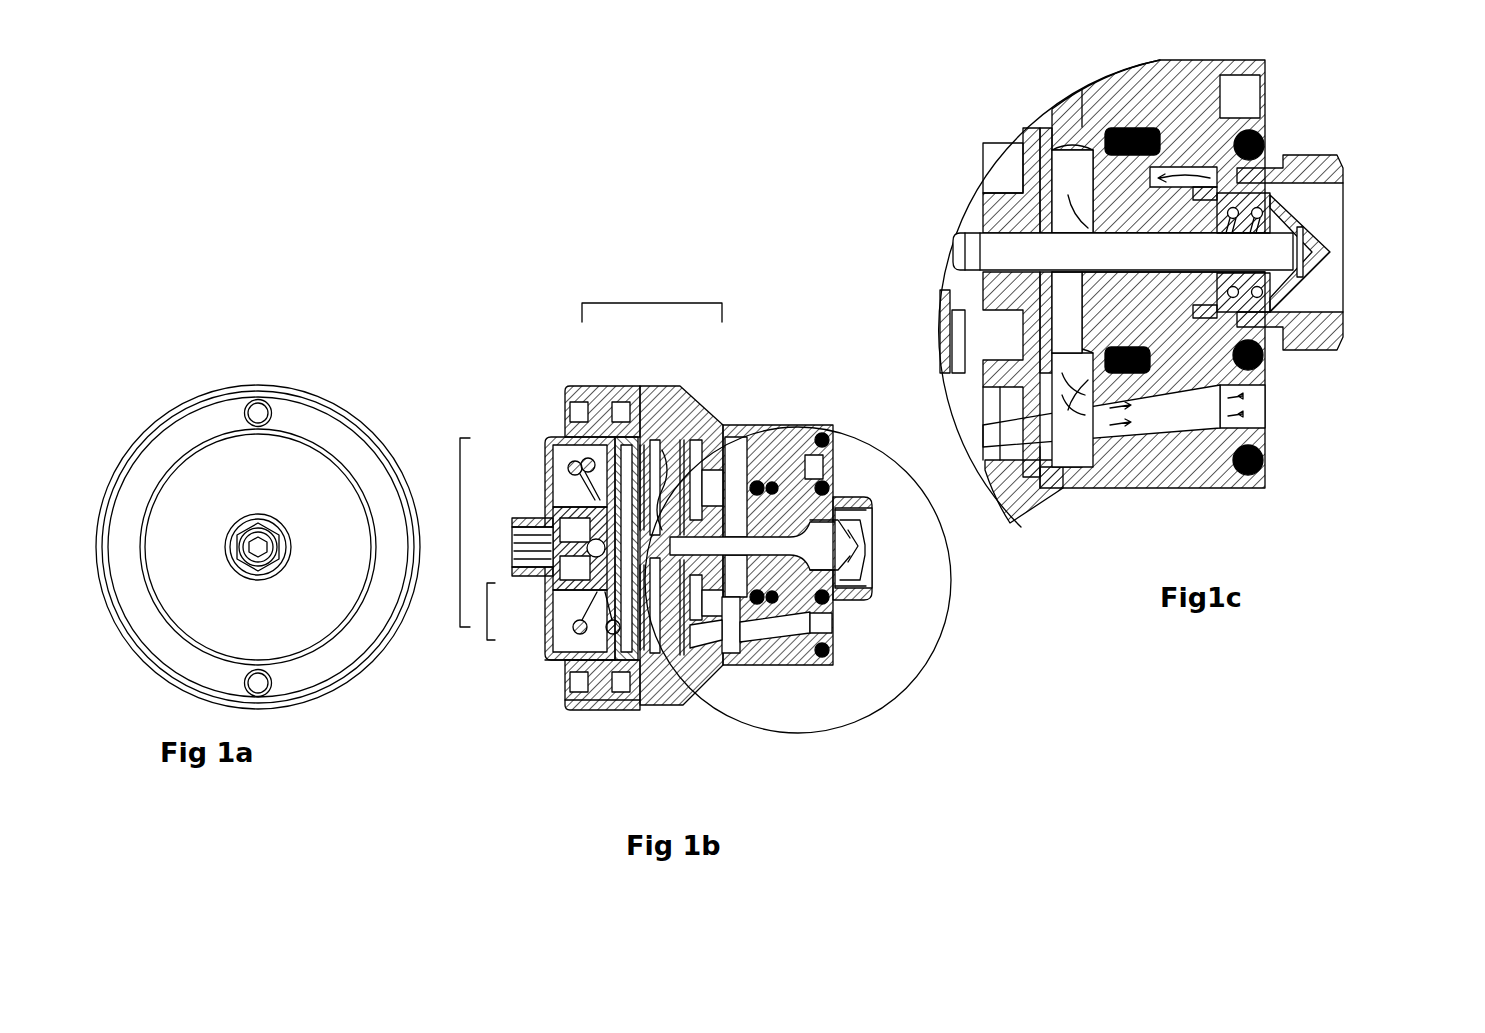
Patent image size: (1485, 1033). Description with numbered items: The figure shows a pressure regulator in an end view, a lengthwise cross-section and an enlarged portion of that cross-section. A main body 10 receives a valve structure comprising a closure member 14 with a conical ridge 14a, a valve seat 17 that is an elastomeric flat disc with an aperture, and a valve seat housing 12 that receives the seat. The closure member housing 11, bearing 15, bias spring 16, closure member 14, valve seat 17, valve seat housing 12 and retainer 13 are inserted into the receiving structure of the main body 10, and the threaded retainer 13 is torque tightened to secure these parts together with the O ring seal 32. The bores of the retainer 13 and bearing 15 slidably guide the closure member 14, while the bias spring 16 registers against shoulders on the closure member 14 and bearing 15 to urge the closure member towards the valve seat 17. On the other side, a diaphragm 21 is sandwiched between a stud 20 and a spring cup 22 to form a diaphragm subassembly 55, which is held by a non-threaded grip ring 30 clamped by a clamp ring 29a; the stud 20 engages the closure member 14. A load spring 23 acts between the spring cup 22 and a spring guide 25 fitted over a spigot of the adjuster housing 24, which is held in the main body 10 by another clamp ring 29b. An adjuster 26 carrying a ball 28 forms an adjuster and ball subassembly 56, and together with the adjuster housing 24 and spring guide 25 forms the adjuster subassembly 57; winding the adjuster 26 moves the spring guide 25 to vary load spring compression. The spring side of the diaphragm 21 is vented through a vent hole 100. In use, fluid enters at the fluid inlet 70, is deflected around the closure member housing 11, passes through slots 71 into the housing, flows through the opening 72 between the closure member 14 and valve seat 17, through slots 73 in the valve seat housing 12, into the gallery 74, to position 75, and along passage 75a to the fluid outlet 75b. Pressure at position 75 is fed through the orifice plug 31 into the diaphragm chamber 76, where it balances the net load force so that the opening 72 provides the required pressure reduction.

In FIG. 1A, the main body 10 is at (240, 380).
In FIG. 1B, the main body 10 is at (700, 398).
In FIG. 1C, the main body 10 is at (1175, 85).
In FIG. 1B, the closure member housing 11 is at (866, 540).
In FIG. 1C, the closure member housing 11 is at (1325, 262).
In FIG. 1B, the valve seat housing 12 is at (748, 480).
In FIG. 1C, the valve seat housing 12 is at (1090, 173).
In FIG. 1B, the retainer 13 is at (705, 445).
In FIG. 1C, the retainer 13 is at (1023, 138).
In FIG. 1B, the closure member 14 is at (846, 500).
In FIG. 1C, the closure member 14 is at (1293, 242).
In FIG. 1C, the ridge 14a is at (1283, 160).
In FIG. 1B, the bearing 15 is at (855, 522).
In FIG. 1C, the bearing 15 is at (1297, 290).
In FIG. 1B, the bias spring 16 is at (852, 523).
In FIG. 1C, the bias spring 16 is at (1293, 330).
In FIG. 1B, the valve seat 17 is at (828, 647).
In FIG. 1C, the valve seat 17 is at (1263, 147).
In FIG. 1B, the stud 20 is at (682, 437).
In FIG. 1B, the diaphragm 21 is at (648, 437).
In FIG. 1B, the spring cup 22 is at (620, 437).
In FIG. 1B, the load spring 23 is at (566, 437).
In FIG. 1A, the adjuster housing 24 is at (257, 618).
In FIG. 1B, the adjuster housing 24 is at (540, 455).
In FIG. 1B, the spring guide 25 is at (545, 485).
In FIG. 1A, the adjuster 26 is at (270, 568).
In FIG. 1B, the adjuster 26 is at (527, 578).
In FIG. 1B, the ball 28 is at (547, 626).
In FIG. 1B, the clamp ring 29a is at (608, 700).
In FIG. 1A, the clamp ring 29b is at (172, 440).
In FIG. 1B, the clamp ring 29b is at (580, 712).
In FIG. 1B, the grip ring 30 is at (650, 695).
In FIG. 1B, the orifice plug 31 is at (684, 641).
In FIG. 1C, the orifice plug 31 is at (1020, 452).
In FIG. 1B, the O ring seal 32 is at (762, 482).
In FIG. 1C, the O ring seal 32 is at (1217, 112).
In FIG. 1B, the diaphragm subassembly 55 is at (652, 300).
In FIG. 1B, the adjuster and ball subassembly 56 is at (477, 611).
In FIG. 1B, the adjuster subassembly 57 is at (451, 532).
In FIG. 1B, the fluid inlet 70 is at (868, 553).
In FIG. 1C, the fluid inlet 70 is at (1340, 253).
In FIG. 1C, the slots 71 is at (1260, 383).
In FIG. 1C, the opening 72 is at (1040, 140).
In FIG. 1C, the slots 73 is at (1068, 331).
In FIG. 1B, the gallery 74 is at (733, 611).
In FIG. 1C, the gallery 74 is at (1158, 420).
In FIG. 1B, the position 75 is at (731, 638).
In FIG. 1C, the position 75 is at (1068, 428).
In FIG. 1B, the passage 75a is at (769, 630).
In FIG. 1C, the passage 75a is at (1156, 416).
In FIG. 1B, the fluid outlet 75b is at (824, 624).
In FIG. 1C, the fluid outlet 75b is at (1251, 406).
In FIG. 1B, the diaphragm chamber 76 is at (709, 653).
In FIG. 1C, the diaphragm chamber 76 is at (967, 443).
In FIG. 1B, the vent hole 100 is at (562, 442).